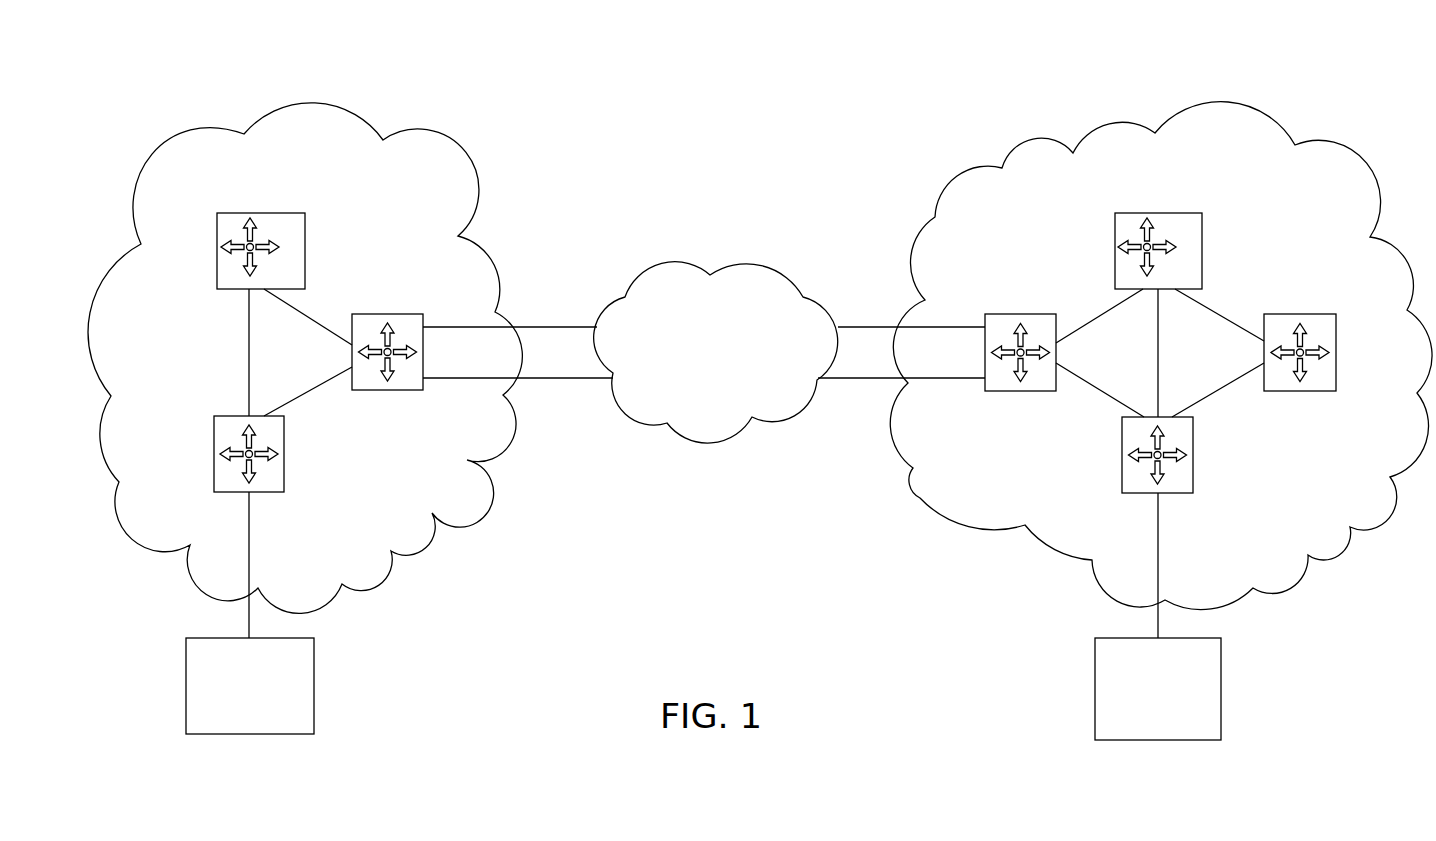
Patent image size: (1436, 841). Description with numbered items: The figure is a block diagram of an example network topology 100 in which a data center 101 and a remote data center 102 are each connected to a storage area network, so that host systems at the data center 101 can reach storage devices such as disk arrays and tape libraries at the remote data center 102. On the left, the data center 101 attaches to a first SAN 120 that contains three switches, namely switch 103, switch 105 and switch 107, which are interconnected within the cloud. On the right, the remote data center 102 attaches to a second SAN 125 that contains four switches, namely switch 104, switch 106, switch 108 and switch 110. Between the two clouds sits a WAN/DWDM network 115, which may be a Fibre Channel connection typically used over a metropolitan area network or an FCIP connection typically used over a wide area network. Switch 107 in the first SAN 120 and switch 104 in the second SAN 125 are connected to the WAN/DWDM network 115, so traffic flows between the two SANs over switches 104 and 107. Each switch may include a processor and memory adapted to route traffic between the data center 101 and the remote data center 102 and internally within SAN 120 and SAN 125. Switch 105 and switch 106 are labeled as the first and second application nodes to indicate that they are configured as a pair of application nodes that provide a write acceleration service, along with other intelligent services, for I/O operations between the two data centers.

The network topology 100 is at (919, 50).
The data center 101 is at (314, 668).
The remote data center 102 is at (1221, 667).
The switch 103 is at (284, 437).
The switch 104 is at (1003, 314).
The switch 105 is at (267, 213).
The switch 106 is at (1173, 213).
The switch 107 is at (367, 314).
The switch 108 is at (1289, 314).
The switch 110 is at (1193, 437).
The WAN/DWDM network 115 is at (762, 263).
The storage area network 120 is at (483, 508).
The storage area network 125 is at (920, 500).